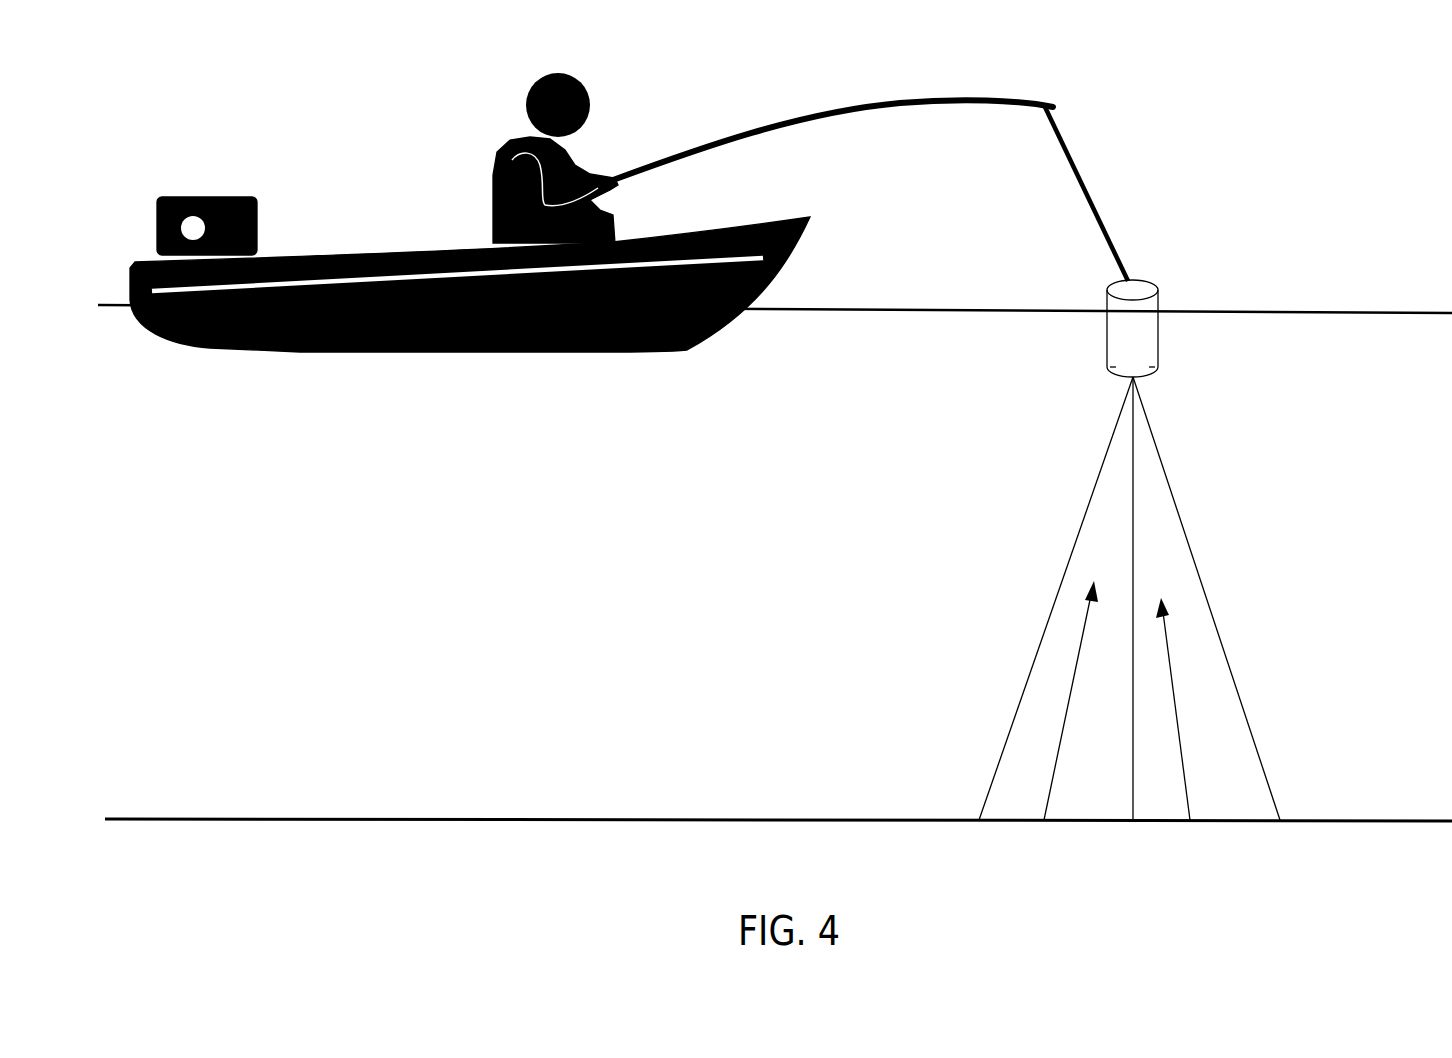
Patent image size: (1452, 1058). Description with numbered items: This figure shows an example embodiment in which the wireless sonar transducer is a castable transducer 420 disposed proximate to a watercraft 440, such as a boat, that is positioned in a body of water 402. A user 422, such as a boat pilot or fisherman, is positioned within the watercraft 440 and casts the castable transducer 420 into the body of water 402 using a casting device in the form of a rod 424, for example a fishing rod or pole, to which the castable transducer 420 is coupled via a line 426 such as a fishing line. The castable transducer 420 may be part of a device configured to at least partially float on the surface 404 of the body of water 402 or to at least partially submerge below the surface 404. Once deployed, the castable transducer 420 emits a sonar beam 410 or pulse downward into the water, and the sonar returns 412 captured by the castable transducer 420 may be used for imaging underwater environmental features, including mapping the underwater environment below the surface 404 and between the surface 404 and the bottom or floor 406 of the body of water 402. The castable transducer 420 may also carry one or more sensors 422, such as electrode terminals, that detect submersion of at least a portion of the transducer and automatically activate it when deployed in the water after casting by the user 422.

The body of water 402 is at (768, 637).
The surface 404 is at (775, 323).
The bottom or floor 406 is at (778, 801).
The sonar beam 410 is at (1140, 598).
The sonar returns 412 is at (1195, 697).
The castable transducer 420 is at (1181, 310).
The user 422 is at (876, 228).
The rod 424 is at (833, 140).
The line 426 is at (1106, 194).
The watercraft 440 is at (470, 258).